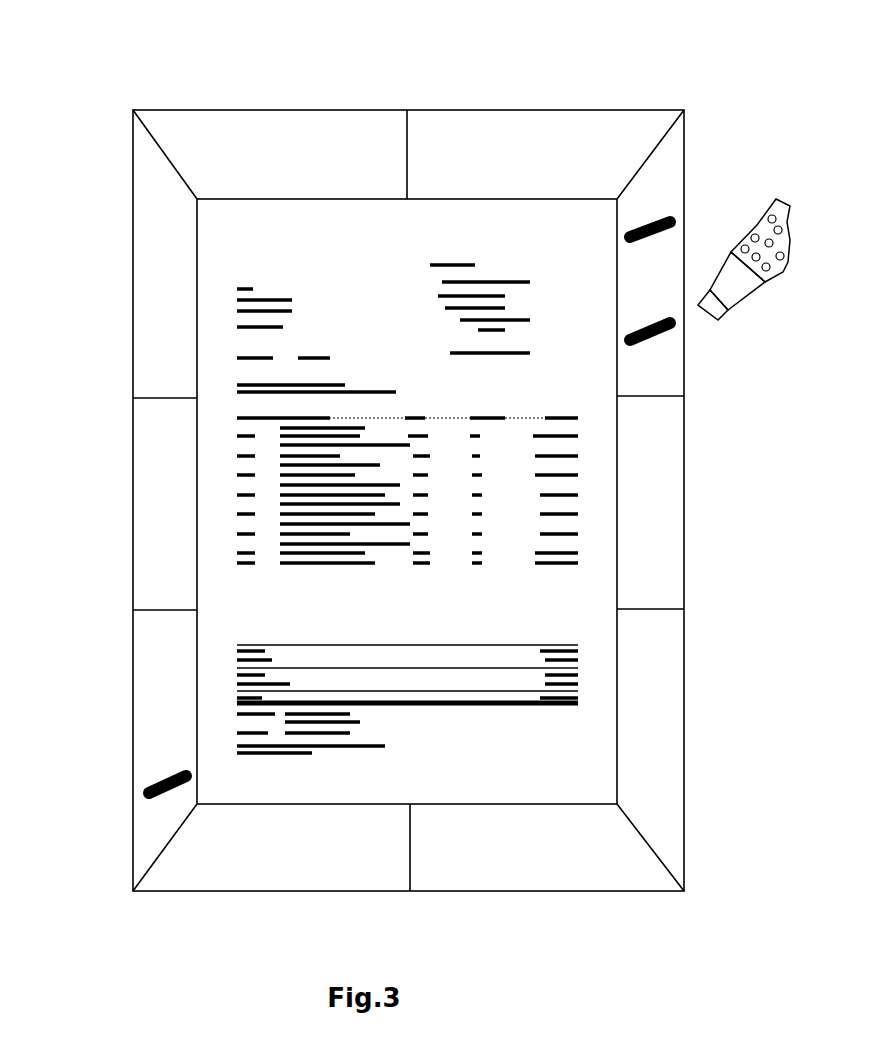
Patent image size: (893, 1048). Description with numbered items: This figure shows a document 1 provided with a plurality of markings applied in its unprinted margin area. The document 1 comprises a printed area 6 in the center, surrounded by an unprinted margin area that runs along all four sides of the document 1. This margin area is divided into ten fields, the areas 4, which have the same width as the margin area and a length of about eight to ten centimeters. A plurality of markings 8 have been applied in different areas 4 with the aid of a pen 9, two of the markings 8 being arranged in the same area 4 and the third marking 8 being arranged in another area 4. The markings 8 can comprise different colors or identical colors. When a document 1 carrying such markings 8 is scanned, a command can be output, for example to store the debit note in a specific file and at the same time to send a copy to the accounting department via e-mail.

The document 1 is at (395, 492).
The area 4 is at (708, 30).
The printed area 6 is at (357, 278).
The marking 8 is at (396, 469).
The pen 9 is at (757, 225).